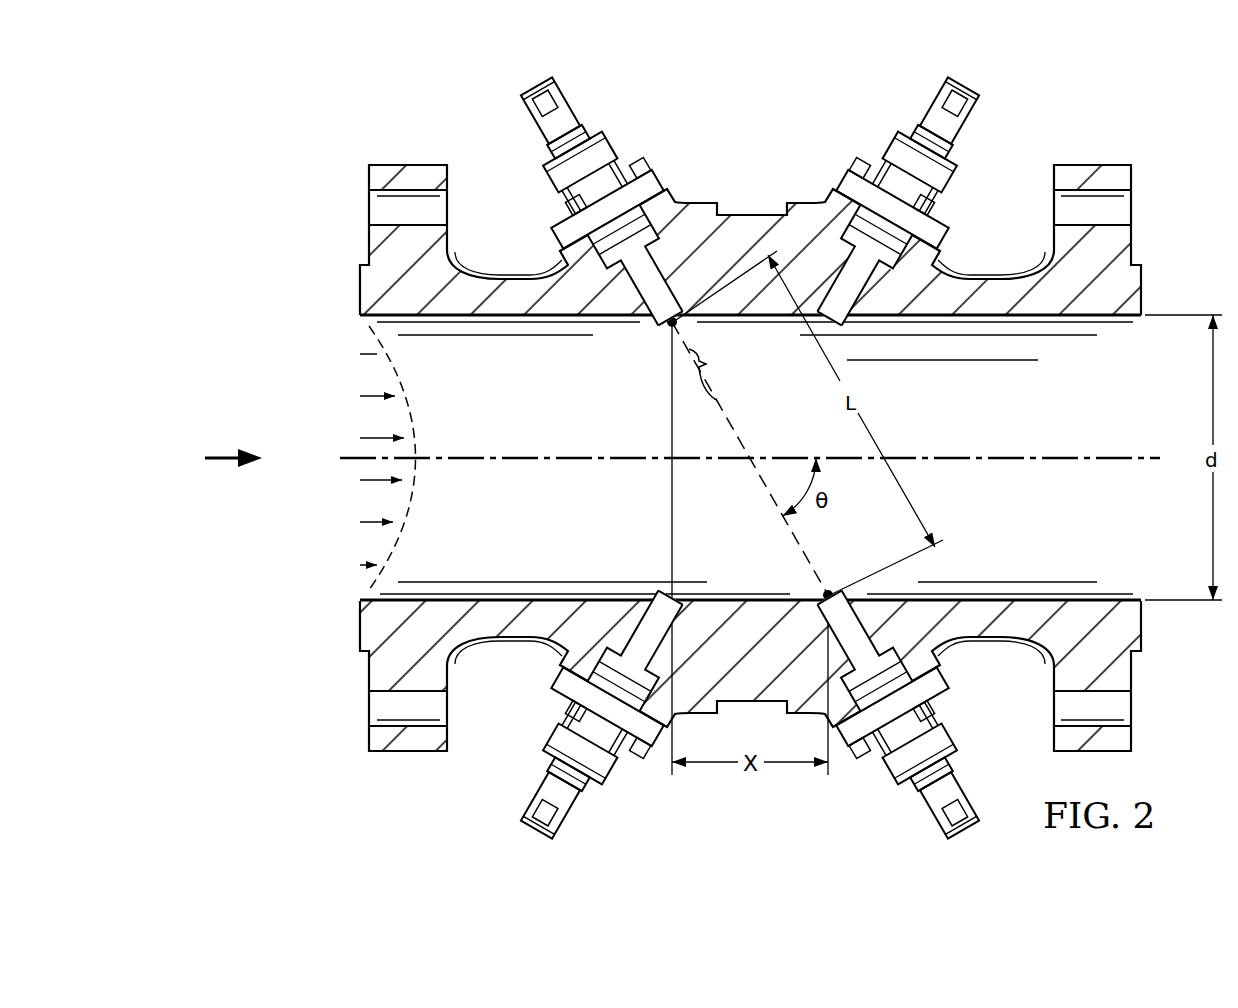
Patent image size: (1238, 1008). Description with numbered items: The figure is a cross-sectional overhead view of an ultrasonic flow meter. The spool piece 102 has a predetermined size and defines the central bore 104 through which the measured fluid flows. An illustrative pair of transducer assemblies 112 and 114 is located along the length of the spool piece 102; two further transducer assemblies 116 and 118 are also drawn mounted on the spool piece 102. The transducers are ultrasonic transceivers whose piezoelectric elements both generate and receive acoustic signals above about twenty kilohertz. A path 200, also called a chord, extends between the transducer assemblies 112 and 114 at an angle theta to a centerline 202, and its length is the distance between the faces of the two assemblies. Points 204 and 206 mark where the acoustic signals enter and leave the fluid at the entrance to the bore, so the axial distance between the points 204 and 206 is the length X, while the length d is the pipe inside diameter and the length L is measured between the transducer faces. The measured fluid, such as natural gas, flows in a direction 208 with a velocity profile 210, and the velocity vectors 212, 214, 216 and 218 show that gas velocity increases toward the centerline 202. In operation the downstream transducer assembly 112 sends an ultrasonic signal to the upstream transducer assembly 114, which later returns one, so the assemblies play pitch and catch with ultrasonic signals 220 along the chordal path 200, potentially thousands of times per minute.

The spool piece 102 is at (752, 213).
The central bore 104 is at (993, 417).
The transducer assembly 112 is at (928, 815).
The transducer assembly 114 is at (615, 150).
The ultrasonic transducer 116 is at (568, 813).
The ultrasonic transducer 118 is at (932, 103).
The path (chord) 200 is at (797, 543).
The centerline 202 is at (1010, 463).
The point 204 is at (833, 592).
The point 206 is at (665, 326).
The direction 208 is at (223, 455).
The velocity profile 210 is at (408, 410).
The velocity vector 212 is at (360, 396).
The velocity vector 214 is at (360, 438).
The velocity vector 216 is at (360, 480).
The velocity vector 218 is at (360, 522).
The ultrasonic signals 220 is at (710, 362).